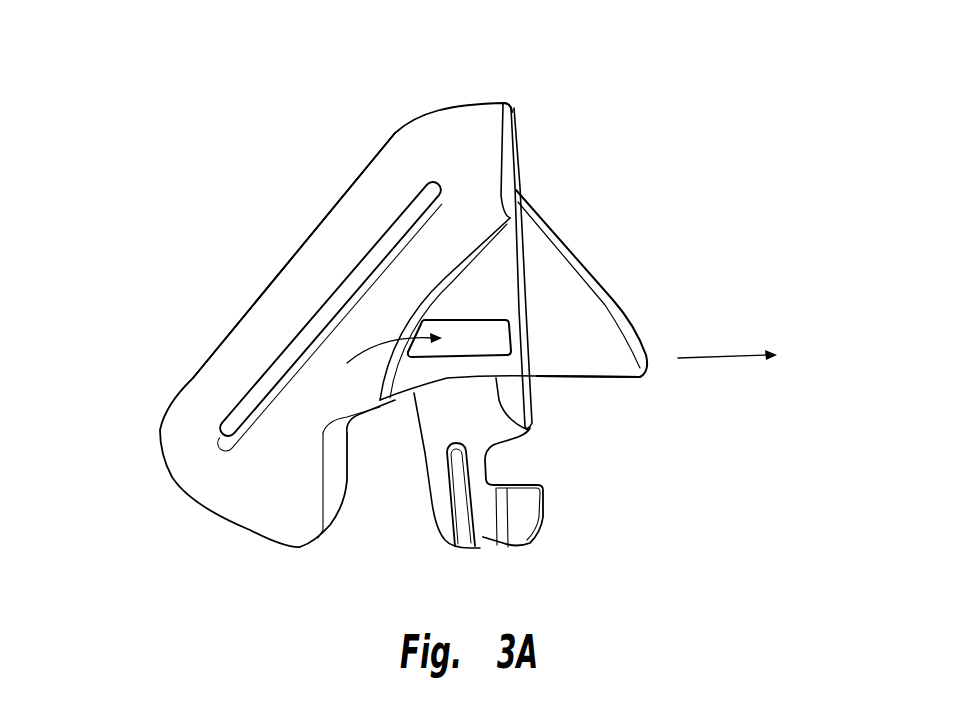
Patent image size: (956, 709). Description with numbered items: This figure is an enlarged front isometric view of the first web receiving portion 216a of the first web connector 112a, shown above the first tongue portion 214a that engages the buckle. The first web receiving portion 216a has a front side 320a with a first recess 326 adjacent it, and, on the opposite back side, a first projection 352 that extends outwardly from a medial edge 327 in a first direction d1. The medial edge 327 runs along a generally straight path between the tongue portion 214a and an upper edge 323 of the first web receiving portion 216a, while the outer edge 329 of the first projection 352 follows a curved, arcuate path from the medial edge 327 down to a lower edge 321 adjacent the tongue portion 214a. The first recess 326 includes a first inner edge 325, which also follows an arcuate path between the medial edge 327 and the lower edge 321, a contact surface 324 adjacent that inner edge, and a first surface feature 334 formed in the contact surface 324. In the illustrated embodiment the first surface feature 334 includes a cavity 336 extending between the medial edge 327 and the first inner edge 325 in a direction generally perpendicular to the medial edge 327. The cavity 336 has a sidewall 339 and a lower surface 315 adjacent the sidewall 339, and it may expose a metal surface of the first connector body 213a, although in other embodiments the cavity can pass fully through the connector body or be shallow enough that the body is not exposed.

The first web connector 112a is at (308, 192).
The upper edge 323 is at (488, 102).
The first recess 326 is at (487, 267).
The medial edge 327 is at (537, 248).
The outer edge 329 is at (553, 245).
The first projection 352 is at (565, 285).
The first inner edge 325 is at (427, 306).
The contact surface 324 is at (488, 308).
The lower surface 315 is at (487, 351).
The first connector body 213a is at (517, 330).
The first surface feature 334 is at (380, 361).
The front side 320a is at (250, 330).
The cavity 336 is at (508, 357).
The lower edge 321 is at (532, 431).
The first web receiving portion 216a is at (190, 473).
The sidewall 339 is at (432, 345).
The first tongue portion 214a is at (482, 540).
The first direction d1 is at (733, 355).